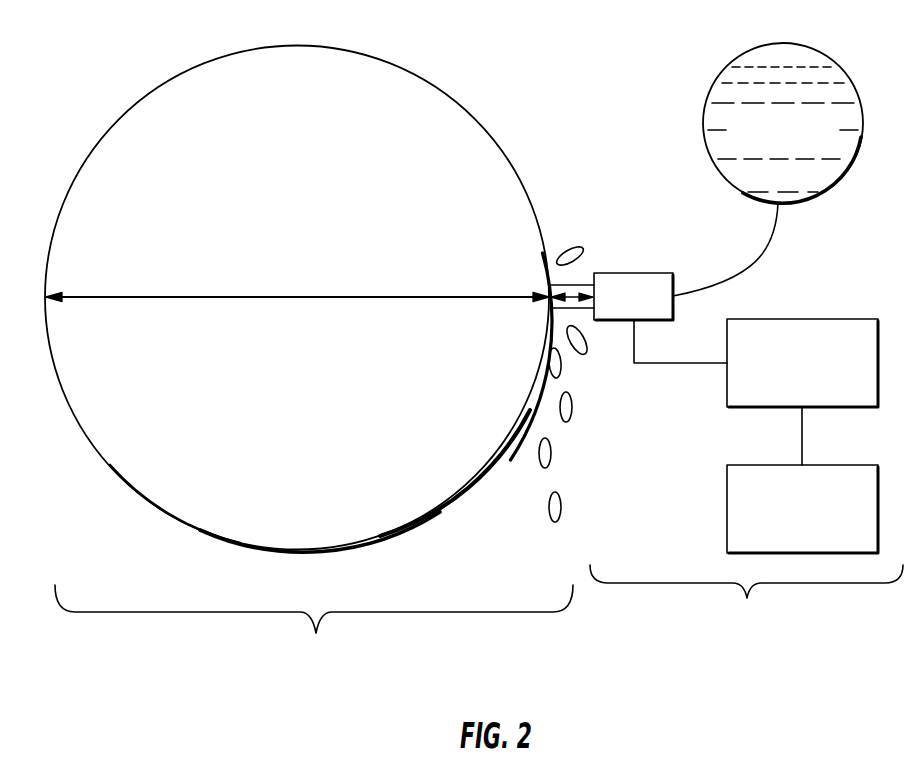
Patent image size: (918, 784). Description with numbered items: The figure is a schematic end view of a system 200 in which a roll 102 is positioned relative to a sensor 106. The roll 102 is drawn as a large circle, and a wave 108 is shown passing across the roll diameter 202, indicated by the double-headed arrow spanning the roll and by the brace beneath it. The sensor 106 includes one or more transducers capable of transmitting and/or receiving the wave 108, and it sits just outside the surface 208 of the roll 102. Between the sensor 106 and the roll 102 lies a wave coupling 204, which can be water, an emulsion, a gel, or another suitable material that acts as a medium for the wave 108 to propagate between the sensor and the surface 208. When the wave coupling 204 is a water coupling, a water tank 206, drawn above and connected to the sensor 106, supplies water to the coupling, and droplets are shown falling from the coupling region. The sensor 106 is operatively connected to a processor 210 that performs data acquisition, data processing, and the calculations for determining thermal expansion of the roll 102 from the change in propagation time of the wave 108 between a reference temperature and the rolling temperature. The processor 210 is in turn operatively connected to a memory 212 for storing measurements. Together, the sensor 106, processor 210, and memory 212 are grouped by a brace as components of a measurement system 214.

The system 200 is at (78, 93).
The roll 102 is at (297, 298).
The wave 108 is at (323, 298).
The surface of the roll 208 is at (468, 108).
The wave coupling 204 is at (582, 284).
The sensor 106 is at (650, 273).
The water tank 206 is at (711, 121).
The processor 210 is at (848, 319).
The memory 212 is at (848, 465).
The measurement system 214 is at (746, 603).
The roll diameter 202 is at (314, 629).